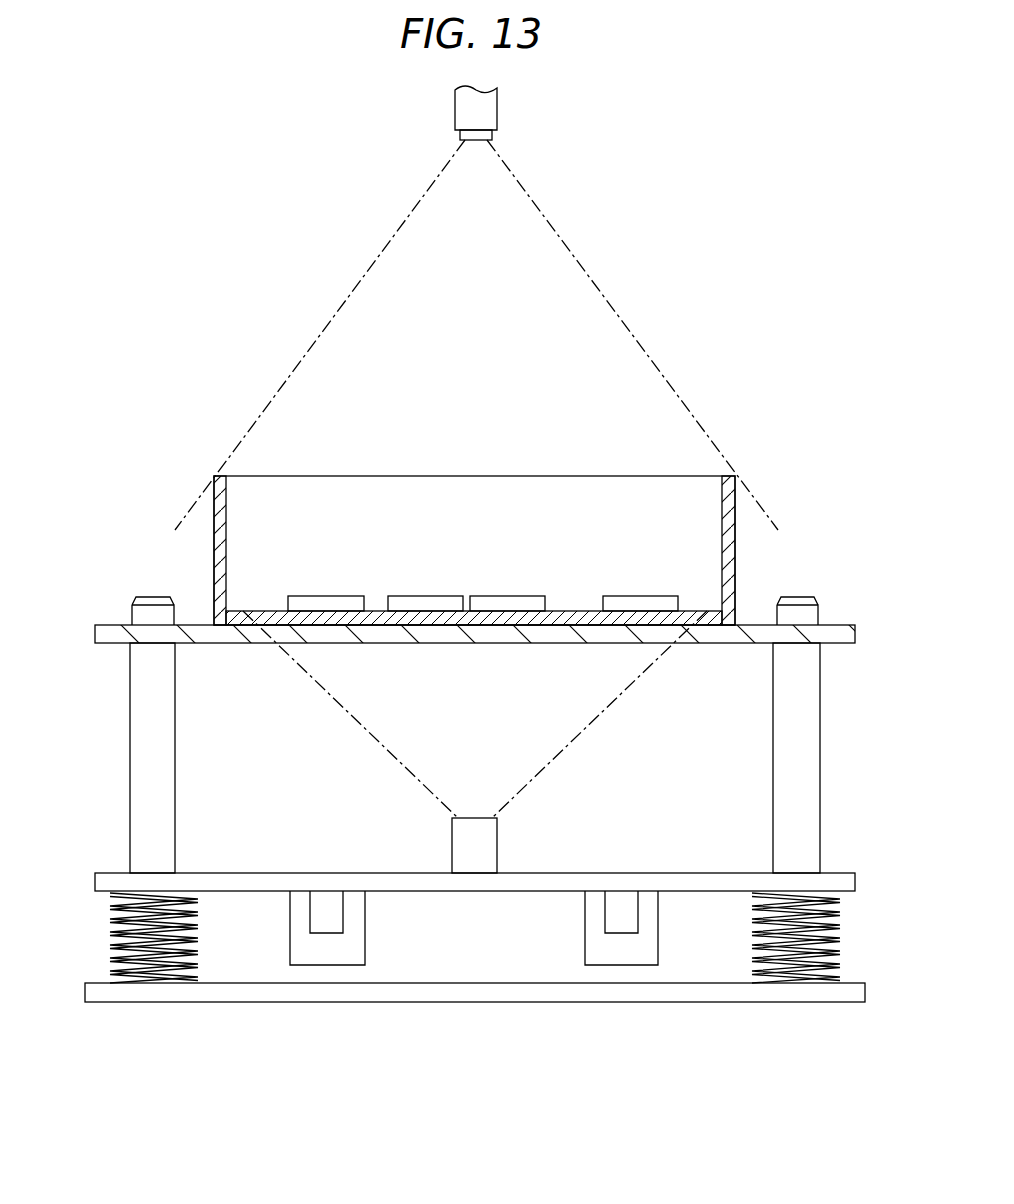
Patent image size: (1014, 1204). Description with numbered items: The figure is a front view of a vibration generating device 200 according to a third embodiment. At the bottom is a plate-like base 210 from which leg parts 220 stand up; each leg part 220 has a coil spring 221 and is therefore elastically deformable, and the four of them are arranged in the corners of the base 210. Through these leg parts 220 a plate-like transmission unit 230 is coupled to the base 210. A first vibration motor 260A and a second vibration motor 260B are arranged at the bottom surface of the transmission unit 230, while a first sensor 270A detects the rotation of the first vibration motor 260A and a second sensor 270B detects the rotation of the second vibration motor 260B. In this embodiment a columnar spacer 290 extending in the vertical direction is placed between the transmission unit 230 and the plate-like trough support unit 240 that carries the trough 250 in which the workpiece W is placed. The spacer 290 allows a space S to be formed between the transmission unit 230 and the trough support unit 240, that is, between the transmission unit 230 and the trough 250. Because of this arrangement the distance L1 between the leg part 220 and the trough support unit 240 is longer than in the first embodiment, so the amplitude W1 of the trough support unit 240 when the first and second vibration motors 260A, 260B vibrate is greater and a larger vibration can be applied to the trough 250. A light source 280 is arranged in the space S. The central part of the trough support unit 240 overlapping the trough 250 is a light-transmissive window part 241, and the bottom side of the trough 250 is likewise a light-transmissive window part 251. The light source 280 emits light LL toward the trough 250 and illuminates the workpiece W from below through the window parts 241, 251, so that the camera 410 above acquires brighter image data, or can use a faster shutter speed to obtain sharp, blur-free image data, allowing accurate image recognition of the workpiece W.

The camera 410 is at (483, 112).
The vibration generating device 200 is at (768, 422).
The trough 250 is at (520, 597).
The light-transmissive window part 251 is at (503, 620).
The trough support unit 240 is at (432, 658).
The light-transmissive window part 241 is at (406, 632).
The spacer 290 is at (150, 730).
The light source 280 is at (475, 857).
The transmission unit 230 is at (102, 882).
The leg part 220 is at (474, 938).
The coil spring 221 is at (880, 936).
The first vibration motor 260A is at (303, 972).
The second vibration motor 260B is at (598, 972).
The first sensor 270A is at (325, 905).
The second sensor 270B is at (620, 905).
The base 210 is at (470, 992).
The workpiece W is at (428, 598).
The amplitude W1 is at (547, 455).
The distance L1 is at (741, 645).
The light LL is at (395, 762).
The space S is at (660, 767).